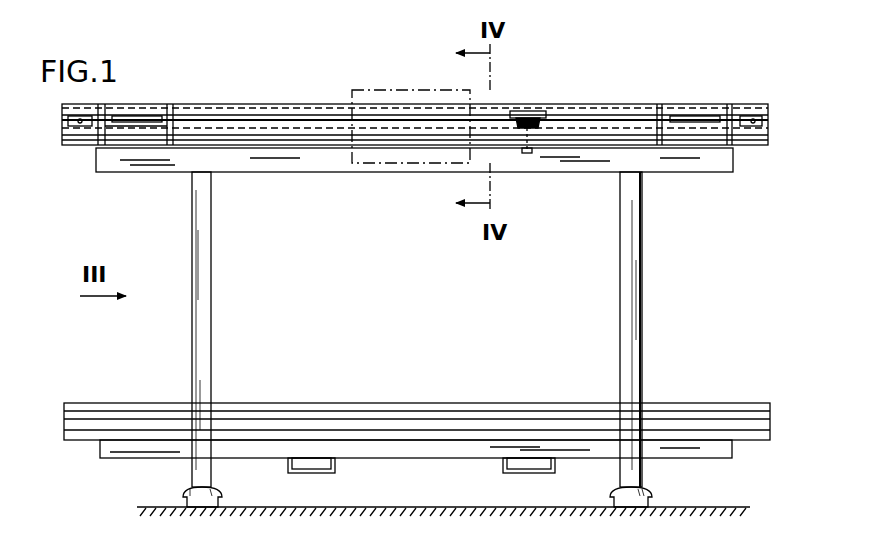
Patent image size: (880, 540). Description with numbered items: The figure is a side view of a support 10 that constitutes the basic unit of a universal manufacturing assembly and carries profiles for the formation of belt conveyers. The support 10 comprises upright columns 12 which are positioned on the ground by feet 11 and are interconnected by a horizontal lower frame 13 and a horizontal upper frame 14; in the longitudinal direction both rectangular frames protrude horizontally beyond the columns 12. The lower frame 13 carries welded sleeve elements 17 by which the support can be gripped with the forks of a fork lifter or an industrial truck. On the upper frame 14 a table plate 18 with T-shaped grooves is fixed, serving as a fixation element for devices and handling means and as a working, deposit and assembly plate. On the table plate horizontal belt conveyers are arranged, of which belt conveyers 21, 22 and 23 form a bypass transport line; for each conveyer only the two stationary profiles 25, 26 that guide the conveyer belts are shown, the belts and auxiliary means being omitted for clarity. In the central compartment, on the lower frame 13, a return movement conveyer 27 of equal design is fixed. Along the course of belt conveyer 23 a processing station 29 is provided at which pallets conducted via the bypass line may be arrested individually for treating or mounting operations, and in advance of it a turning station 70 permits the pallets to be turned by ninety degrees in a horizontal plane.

The support 10 is at (646, 292).
The feet 11 is at (218, 490).
The upright columns 12 is at (206, 368).
The lower frame 13 is at (458, 450).
The upper frame 14 is at (562, 170).
The sleeve elements 17 is at (330, 473).
The table plate 18 is at (733, 146).
The belt conveyer 21 is at (164, 100).
The belt conveyer 22 is at (704, 96).
The belt conveyer 23 is at (586, 96).
The stationary profile 25 is at (170, 146).
The stationary profile 26 is at (100, 148).
The return movement conveyer 27 is at (468, 394).
The processing station 29 is at (386, 88).
The turning station 70 is at (522, 103).